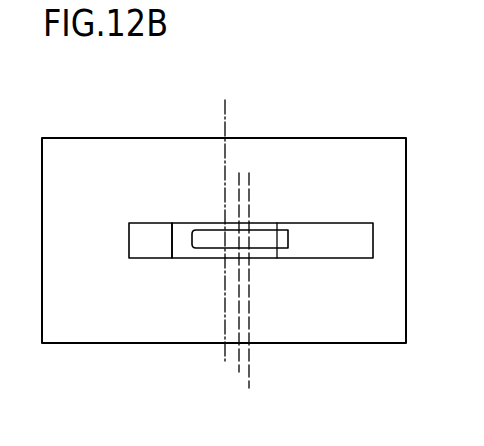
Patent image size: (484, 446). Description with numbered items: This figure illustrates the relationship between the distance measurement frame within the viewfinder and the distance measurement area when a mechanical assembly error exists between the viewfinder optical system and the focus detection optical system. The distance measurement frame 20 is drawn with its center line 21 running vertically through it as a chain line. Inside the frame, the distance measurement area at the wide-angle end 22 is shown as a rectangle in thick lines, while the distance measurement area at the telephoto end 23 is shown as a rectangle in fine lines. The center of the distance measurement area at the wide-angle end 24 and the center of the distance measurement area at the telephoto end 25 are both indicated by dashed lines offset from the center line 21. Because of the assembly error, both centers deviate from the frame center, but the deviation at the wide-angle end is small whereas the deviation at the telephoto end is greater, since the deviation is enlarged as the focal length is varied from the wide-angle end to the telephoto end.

The distance measurement frame 20 is at (277, 222).
The center line of the distance measurement frame 21 is at (226, 112).
The distance measurement area at the wide-angle end 22 is at (198, 249).
The distance measurement area at the telephoto end 23 is at (136, 258).
The center of the distance measurement area at the wide-angle end 24 is at (237, 363).
The center of the distance measurement area at the telephoto end 25 is at (250, 380).